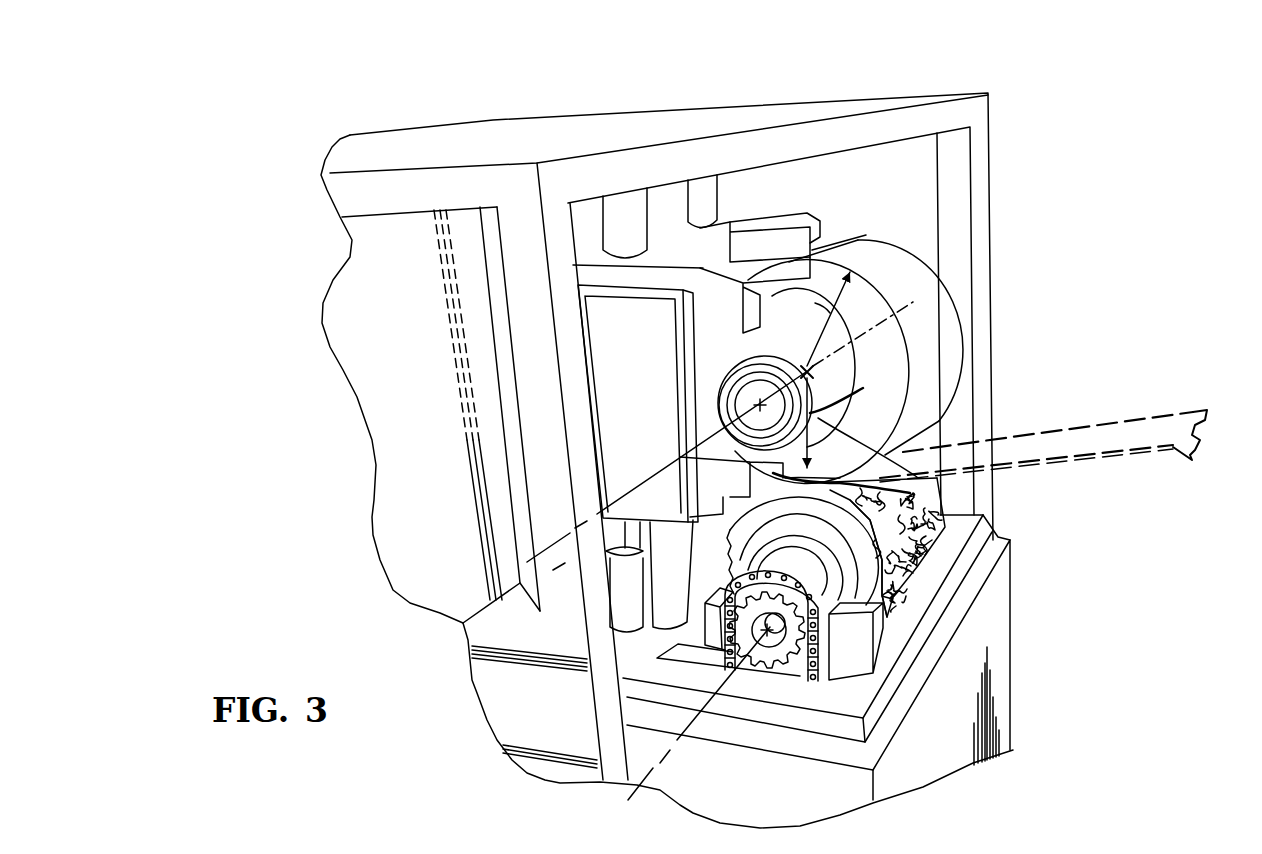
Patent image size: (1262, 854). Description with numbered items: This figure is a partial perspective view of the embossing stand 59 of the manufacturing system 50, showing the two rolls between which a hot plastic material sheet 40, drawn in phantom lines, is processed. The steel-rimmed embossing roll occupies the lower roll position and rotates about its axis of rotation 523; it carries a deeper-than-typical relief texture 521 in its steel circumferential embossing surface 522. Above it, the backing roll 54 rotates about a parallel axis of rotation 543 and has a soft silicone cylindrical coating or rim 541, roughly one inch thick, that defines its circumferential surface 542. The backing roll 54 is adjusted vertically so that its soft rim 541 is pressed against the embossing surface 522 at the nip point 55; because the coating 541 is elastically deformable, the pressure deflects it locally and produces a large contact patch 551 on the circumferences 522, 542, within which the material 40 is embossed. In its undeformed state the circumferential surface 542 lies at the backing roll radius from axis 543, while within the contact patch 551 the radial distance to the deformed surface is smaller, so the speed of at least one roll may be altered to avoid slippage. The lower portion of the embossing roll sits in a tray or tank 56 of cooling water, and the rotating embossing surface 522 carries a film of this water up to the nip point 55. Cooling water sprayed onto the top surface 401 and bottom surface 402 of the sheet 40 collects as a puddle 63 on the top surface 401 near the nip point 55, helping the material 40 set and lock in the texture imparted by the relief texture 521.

The embossing stand 59 is at (962, 55).
The manufacturing system 50 is at (368, 196).
The backing roll 54 is at (957, 260).
The circumferential surface 542 is at (943, 331).
The cylindrical coating or rim 541 is at (920, 372).
The axis of rotation 543 is at (637, 493).
The nip point 55 is at (836, 470).
The contact patch 551 is at (890, 528).
The tray or tank 56 is at (957, 582).
The puddle 63 is at (917, 460).
The plastic material sheet 40 is at (1175, 407).
The top surface 401 is at (1108, 433).
The bottom surface 402 is at (1190, 450).
The relief texture 521 is at (867, 533).
The circumferential embossing surface 522 is at (868, 558).
The axis of rotation 523 is at (677, 748).